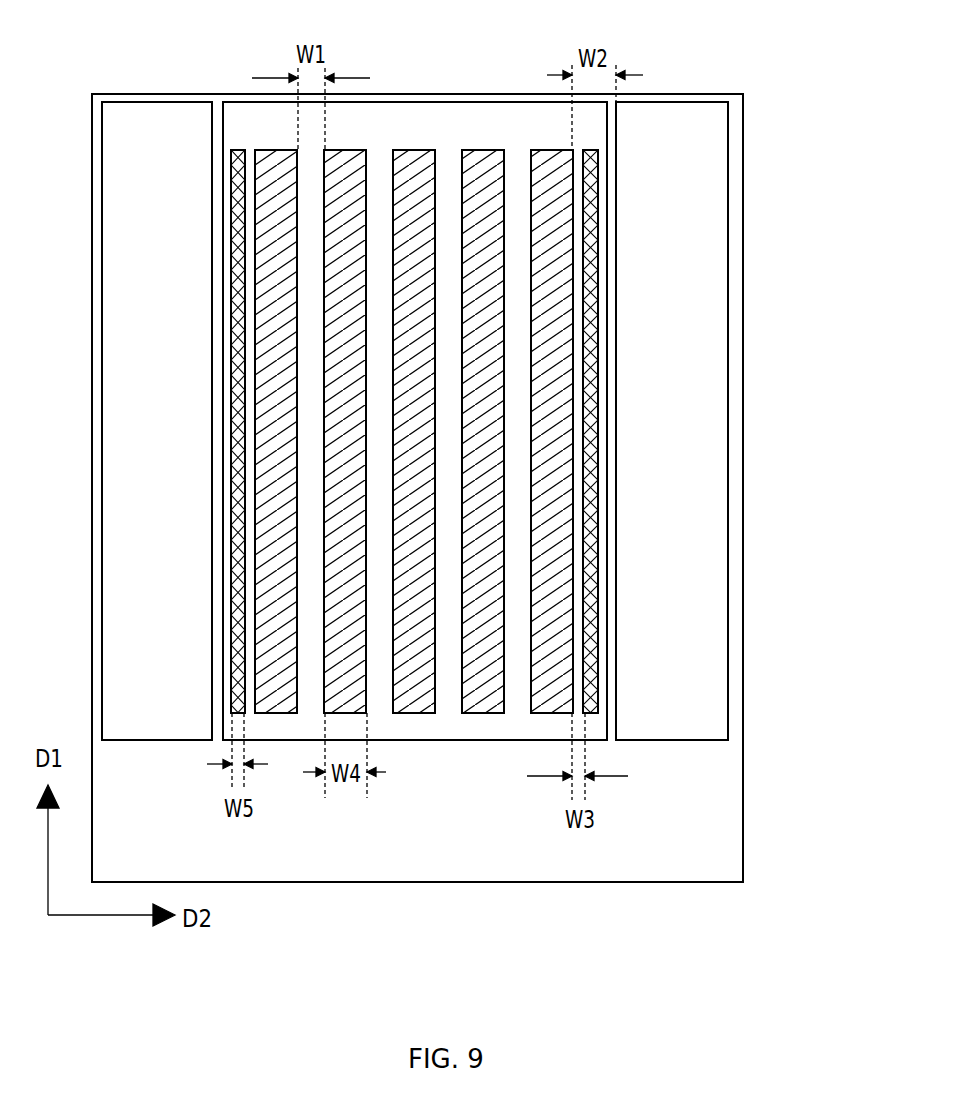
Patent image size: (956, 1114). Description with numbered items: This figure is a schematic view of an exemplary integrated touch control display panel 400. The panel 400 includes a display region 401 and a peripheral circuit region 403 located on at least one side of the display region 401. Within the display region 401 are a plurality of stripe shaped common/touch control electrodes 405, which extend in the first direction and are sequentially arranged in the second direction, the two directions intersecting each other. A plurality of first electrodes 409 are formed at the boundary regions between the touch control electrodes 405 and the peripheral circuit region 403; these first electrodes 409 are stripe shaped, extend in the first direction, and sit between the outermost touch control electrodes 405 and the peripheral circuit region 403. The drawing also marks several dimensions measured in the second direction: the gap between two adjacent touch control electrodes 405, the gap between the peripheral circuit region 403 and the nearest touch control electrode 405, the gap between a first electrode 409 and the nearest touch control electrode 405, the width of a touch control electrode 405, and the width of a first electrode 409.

The integrated touch control display panel 400 is at (93, 56).
The display region 401 is at (570, 360).
The peripheral circuit region 403 is at (692, 242).
The touch control electrode 405 is at (557, 542).
The first electrode 409 is at (593, 437).